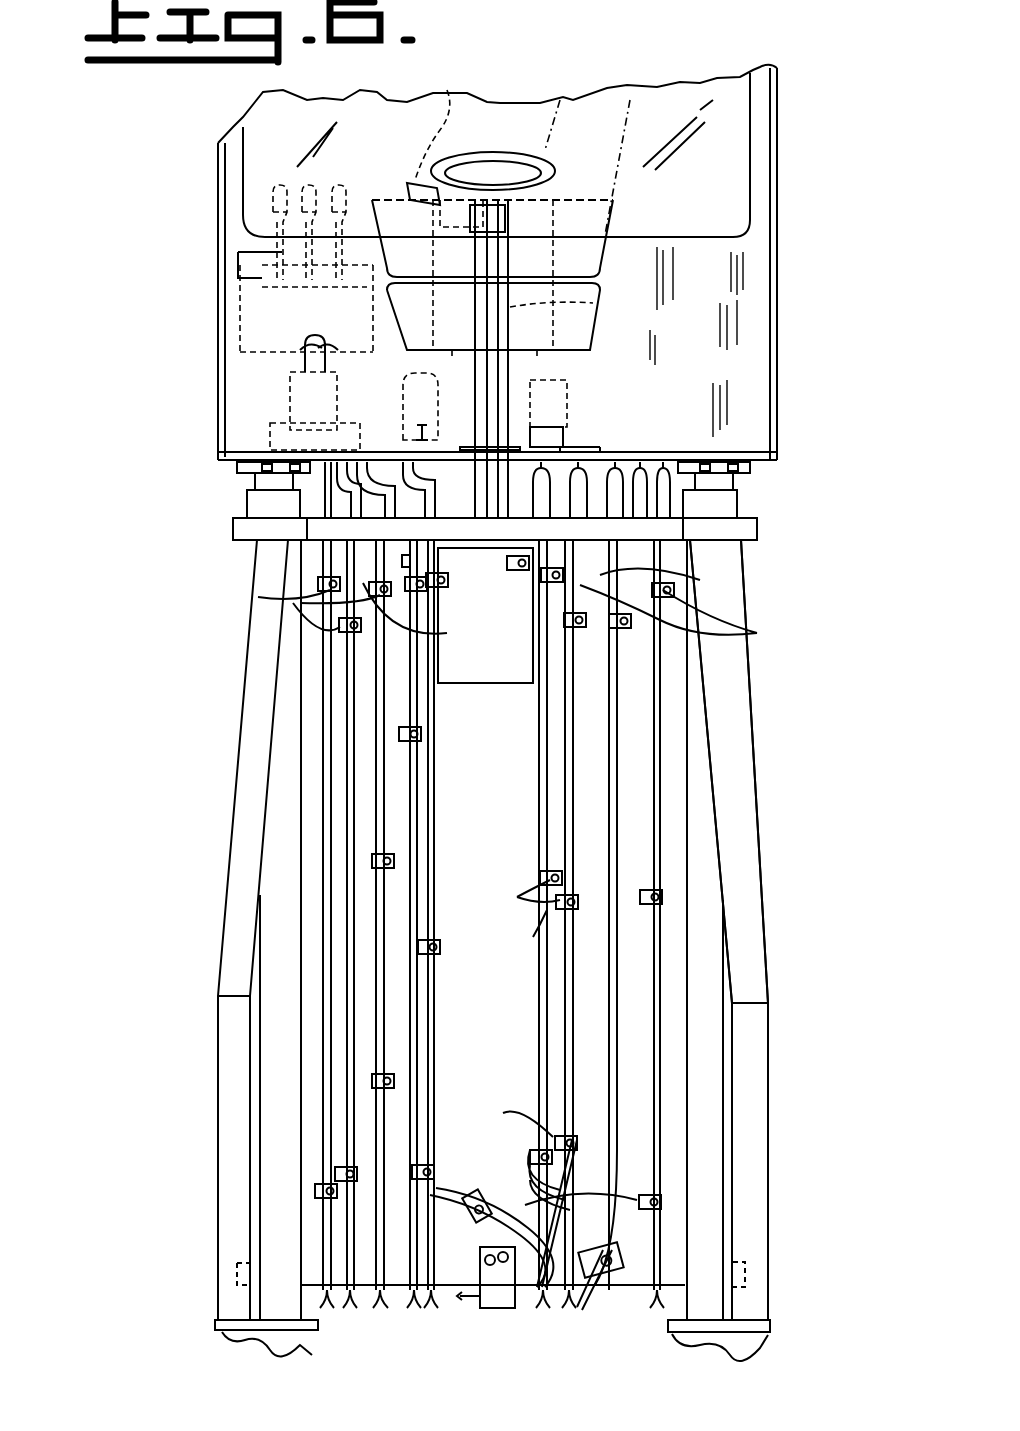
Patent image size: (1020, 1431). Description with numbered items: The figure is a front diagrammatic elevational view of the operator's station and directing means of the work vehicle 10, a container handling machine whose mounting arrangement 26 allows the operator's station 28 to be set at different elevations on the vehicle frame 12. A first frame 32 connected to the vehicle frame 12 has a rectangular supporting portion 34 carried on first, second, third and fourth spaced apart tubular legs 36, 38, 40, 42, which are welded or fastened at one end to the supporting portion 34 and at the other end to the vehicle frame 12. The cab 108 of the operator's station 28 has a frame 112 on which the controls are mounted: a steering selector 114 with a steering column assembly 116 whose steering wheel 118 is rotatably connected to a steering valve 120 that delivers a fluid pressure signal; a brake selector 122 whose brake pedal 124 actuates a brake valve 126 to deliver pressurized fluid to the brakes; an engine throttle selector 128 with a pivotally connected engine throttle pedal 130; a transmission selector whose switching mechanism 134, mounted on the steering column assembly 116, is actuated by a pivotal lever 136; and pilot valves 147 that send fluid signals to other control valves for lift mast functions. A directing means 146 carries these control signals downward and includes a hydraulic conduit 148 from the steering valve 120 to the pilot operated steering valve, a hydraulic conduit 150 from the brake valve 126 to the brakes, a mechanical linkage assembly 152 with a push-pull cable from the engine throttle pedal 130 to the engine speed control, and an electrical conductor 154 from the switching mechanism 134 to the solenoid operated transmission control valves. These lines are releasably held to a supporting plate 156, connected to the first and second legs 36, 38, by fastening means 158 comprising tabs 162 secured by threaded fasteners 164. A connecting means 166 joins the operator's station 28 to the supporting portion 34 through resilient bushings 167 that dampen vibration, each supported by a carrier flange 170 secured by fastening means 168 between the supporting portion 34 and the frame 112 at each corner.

The work vehicle 10 is at (176, 362).
The frame 12 is at (245, 1342).
The mounting arrangement 26 is at (130, 772).
The operator's station 28 is at (792, 275).
The first frame 32 is at (766, 917).
The supporting portion 34 is at (748, 542).
The first leg 36 is at (712, 830).
The second leg 38 is at (262, 928).
The third leg 40 is at (762, 1030).
The fourth leg 42 is at (228, 1088).
The cab 108 is at (770, 165).
The frame 112 is at (773, 460).
The steering selector 114 is at (544, 134).
The steering column assembly 116 is at (583, 318).
The steering wheel 118 is at (566, 150).
The steering valve 120 is at (610, 209).
The brake selector 122 is at (594, 418).
The brake pedal 124 is at (560, 400).
The brake valve 126 is at (600, 443).
The engine throttle selector 128 is at (300, 383).
The engine throttle pedal 130 is at (400, 385).
The switching mechanism 134 is at (390, 198).
The lever 136 is at (447, 92).
The directing means 146 is at (703, 773).
The pilot valves 147 is at (248, 280).
The hydraulic conduit 148 is at (553, 733).
The hydraulic conduit 150 is at (615, 665).
The mechanical linkage assembly 152 is at (430, 728).
The electrical conductor 154 is at (543, 765).
The supporting plate 156 is at (665, 712).
The fastening means 158 is at (233, 628).
The tabs 162 is at (367, 590).
The threaded fasteners 164 is at (520, 897).
The connecting means 166 is at (213, 523).
The resilient bushings 167 is at (247, 500).
The fastening means 168 is at (232, 463).
The carrier flange 170 is at (243, 480).